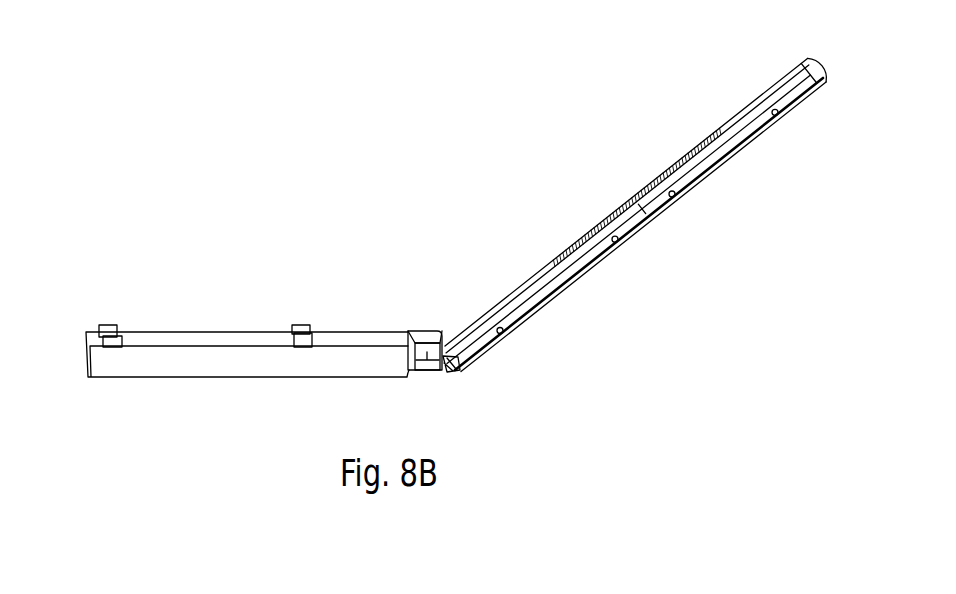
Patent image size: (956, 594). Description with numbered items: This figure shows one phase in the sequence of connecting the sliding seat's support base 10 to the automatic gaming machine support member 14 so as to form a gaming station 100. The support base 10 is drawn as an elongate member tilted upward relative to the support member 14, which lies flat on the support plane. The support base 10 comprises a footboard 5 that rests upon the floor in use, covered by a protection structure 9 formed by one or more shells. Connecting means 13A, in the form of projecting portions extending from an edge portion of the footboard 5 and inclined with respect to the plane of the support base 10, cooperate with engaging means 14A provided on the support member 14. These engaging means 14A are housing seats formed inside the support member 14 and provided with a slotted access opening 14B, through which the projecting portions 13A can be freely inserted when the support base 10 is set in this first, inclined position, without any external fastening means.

The gaming station 100 is at (399, 134).
The support base 10 is at (593, 165).
The protection structure 9 is at (733, 117).
The footboard 5 is at (578, 272).
The automatic gaming machine support member 14 is at (352, 360).
The engaging means 14A is at (420, 373).
The slotted access opening 14B is at (452, 325).
The connecting means 13A is at (448, 370).